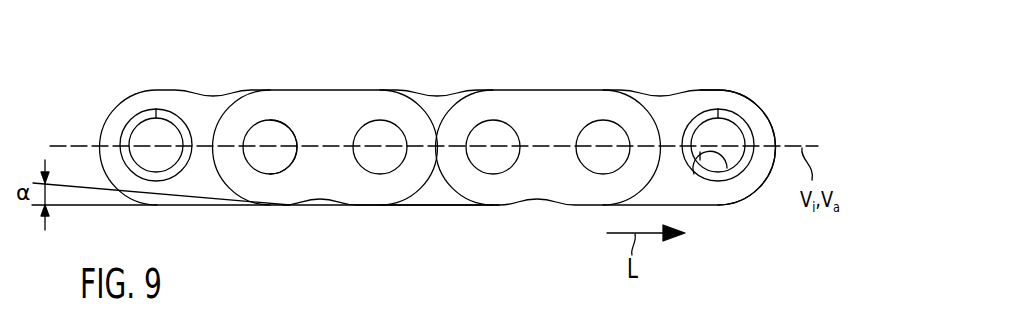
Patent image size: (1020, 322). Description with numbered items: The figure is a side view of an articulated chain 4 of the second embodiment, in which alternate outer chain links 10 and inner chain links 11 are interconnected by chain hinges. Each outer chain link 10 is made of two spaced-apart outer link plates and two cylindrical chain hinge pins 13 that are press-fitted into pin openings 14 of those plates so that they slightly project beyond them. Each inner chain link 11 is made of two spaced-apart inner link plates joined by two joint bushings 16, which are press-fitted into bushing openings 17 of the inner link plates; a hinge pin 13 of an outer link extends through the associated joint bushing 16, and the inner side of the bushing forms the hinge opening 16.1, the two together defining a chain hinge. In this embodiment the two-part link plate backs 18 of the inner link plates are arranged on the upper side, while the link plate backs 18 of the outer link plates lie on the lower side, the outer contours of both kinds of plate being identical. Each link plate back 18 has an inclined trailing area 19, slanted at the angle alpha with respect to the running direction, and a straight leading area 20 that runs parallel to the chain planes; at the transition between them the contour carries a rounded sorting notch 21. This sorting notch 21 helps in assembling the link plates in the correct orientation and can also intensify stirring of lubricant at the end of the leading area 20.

The articulated chain 4 is at (537, 222).
The outer chain link 10 is at (320, 90).
The inner chain link 11 is at (433, 207).
The chain hinge pin 13 is at (492, 128).
The pin opening 14 is at (295, 133).
The joint bushing 16 is at (752, 127).
The hinge opening 16.1 is at (727, 172).
The bushing opening 17 is at (752, 128).
The two-part link plate back 18 is at (658, 89).
The trailing area 19 is at (272, 210).
The leading area 20 is at (345, 207).
The sorting notch 21 is at (437, 94).